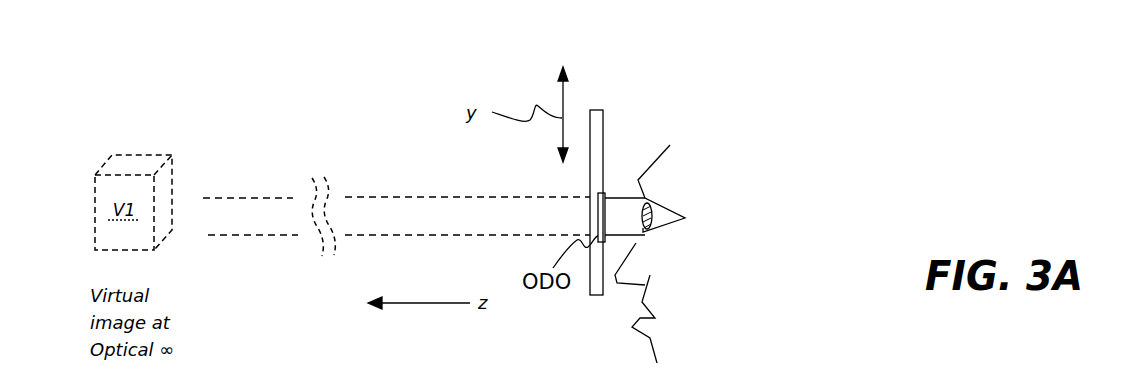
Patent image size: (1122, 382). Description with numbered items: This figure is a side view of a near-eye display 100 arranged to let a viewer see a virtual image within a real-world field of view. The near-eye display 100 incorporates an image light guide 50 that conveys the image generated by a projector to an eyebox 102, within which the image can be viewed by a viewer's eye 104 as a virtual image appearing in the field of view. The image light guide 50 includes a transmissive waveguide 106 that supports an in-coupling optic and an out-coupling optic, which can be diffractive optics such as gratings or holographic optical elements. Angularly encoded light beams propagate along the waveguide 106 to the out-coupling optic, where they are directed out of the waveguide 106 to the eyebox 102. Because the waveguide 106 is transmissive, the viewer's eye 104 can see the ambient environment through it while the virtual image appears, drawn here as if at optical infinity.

The near-eye display 100 is at (604, 93).
The transmissive waveguide 106 is at (604, 114).
The eyebox 102 is at (613, 197).
The viewer's eye 104 is at (662, 226).
The image light guide 50 is at (590, 177).